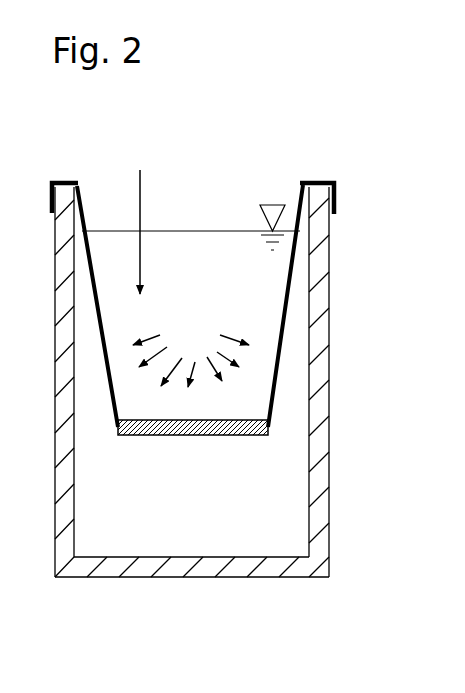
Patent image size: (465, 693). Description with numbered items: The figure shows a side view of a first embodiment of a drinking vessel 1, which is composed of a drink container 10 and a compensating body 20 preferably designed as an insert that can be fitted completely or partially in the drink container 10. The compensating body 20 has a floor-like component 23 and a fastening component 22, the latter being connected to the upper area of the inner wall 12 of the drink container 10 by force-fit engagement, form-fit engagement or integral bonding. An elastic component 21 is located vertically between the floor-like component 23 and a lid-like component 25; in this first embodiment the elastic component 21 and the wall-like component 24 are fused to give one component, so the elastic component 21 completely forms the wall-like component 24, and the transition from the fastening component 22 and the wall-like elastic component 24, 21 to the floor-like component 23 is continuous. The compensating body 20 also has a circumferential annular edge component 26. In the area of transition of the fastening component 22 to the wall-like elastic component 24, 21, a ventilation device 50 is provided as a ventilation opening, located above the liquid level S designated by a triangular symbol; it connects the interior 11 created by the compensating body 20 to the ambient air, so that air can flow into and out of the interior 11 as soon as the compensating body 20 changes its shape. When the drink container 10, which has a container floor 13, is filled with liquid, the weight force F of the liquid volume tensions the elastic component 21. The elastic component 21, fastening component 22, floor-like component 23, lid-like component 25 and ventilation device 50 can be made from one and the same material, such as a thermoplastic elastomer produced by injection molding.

The drinking vessel 1 is at (226, 132).
The drink container 10 is at (331, 497).
The interior 11 is at (127, 516).
The inner wall 12 is at (314, 272).
The container floor 13 is at (178, 566).
The compensating body 20 is at (141, 216).
The elastic component 21 is at (291, 363).
The fastening component 22 is at (310, 220).
The floor-like component 23 is at (204, 438).
The wall-like component 24 is at (293, 323).
The lid-like component 25 is at (63, 179).
The circumferential annular edge component 26 is at (334, 166).
The ventilation device 50 is at (303, 181).
The liquid level S is at (226, 228).
The weight force of a liquid volume F is at (191, 350).